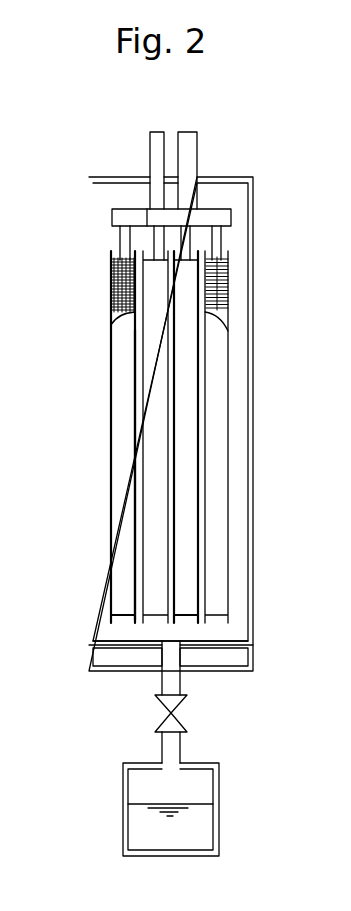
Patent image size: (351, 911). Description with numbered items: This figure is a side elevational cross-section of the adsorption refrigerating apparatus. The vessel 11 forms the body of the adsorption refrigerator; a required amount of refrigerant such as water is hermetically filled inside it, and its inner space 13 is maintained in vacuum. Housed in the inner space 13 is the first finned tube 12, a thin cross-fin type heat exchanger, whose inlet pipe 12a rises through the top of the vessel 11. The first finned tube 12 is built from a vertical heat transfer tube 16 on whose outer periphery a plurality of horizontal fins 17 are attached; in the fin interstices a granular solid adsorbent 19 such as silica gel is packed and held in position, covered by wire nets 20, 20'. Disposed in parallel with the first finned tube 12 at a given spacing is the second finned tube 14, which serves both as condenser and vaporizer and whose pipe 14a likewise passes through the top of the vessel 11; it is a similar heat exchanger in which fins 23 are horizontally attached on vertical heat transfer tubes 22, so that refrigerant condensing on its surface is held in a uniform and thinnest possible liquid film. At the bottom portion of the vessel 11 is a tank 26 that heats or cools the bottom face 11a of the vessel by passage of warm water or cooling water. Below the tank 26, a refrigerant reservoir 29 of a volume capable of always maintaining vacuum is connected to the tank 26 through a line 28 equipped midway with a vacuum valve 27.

The vessel 11 is at (190, 424).
The bottom face 11a is at (222, 641).
The first finned tube 12 is at (183, 513).
The inlet pipe of first tubular member 12a is at (150, 150).
The inner space 13 is at (238, 477).
The second finned tube 14 is at (217, 566).
The inlet pipe of second tubular member 14a is at (187, 135).
The heat transfer tube 16 is at (120, 239).
The fins 17 is at (111, 325).
The granular solid adsorbent 19 is at (112, 290).
The wire net 20 is at (84, 437).
The wire net 20' is at (84, 475).
The heat transfer tubes 22 is at (217, 240).
The fins 23 is at (228, 287).
The tank 26 is at (110, 670).
The vacuum valve 27 is at (178, 712).
The line 28 is at (175, 748).
The refrigerant reservoir 29 is at (216, 808).